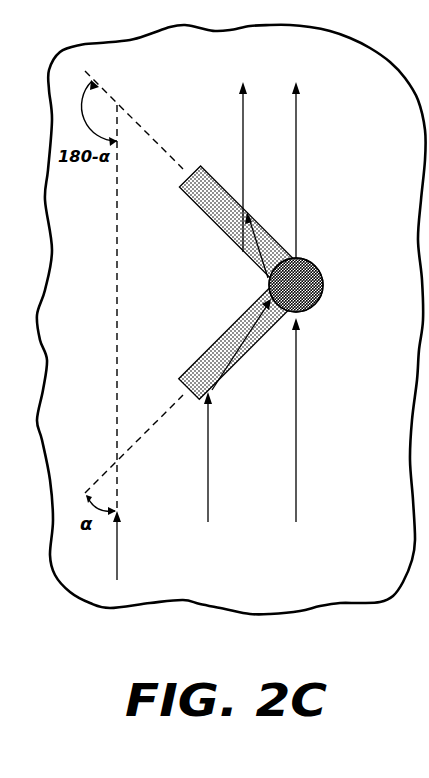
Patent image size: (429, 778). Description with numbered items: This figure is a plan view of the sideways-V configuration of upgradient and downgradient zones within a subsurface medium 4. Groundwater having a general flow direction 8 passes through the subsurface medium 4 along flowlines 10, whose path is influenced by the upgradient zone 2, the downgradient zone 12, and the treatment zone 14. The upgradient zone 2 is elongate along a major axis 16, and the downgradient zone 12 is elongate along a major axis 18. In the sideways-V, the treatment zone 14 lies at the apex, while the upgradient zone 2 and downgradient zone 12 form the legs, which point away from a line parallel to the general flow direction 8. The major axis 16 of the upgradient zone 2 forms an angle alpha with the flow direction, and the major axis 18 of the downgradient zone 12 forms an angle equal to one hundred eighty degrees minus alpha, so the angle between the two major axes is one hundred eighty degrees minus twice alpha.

The upgradient zone 2 is at (247, 350).
The subsurface medium 4 is at (144, 83).
The general flow direction 8 is at (118, 566).
The flowlines 10 is at (296, 118).
The downgradient zone 12 is at (227, 232).
The treatment zone 14 is at (312, 278).
The major axis 16 is at (197, 378).
The major axis 18 is at (211, 214).